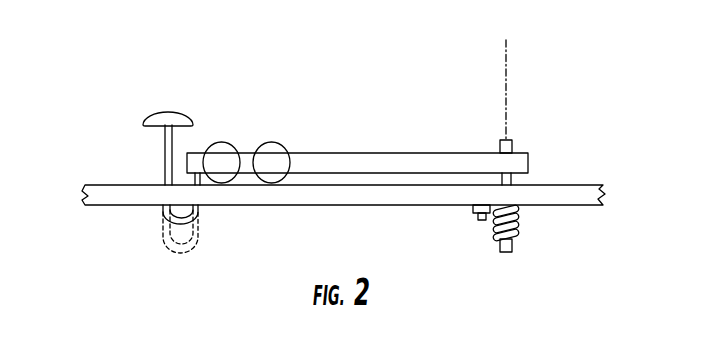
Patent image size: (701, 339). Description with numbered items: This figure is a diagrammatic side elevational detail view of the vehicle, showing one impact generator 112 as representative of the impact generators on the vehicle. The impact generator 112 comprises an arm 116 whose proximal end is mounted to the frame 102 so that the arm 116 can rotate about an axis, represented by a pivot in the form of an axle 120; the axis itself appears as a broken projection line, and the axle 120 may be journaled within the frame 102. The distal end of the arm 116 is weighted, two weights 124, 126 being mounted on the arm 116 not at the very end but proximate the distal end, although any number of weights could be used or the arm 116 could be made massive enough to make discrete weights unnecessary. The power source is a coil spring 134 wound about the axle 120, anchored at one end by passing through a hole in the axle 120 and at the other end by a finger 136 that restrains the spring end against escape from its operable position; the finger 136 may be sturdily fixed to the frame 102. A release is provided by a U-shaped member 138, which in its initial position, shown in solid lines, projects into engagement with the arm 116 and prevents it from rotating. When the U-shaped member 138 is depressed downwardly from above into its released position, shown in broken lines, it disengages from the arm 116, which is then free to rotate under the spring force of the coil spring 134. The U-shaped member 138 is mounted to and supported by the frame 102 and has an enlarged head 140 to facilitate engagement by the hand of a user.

The frame 102 is at (308, 206).
The impact generator 112 is at (428, 81).
The arm 116 is at (329, 153).
The axle 120 is at (513, 146).
The weight 124 is at (222, 142).
The weight 126 is at (273, 142).
The coil spring 134 is at (520, 222).
The finger 136 is at (480, 222).
The U-shaped member 138 is at (123, 98).
The enlarged head 140 is at (171, 112).